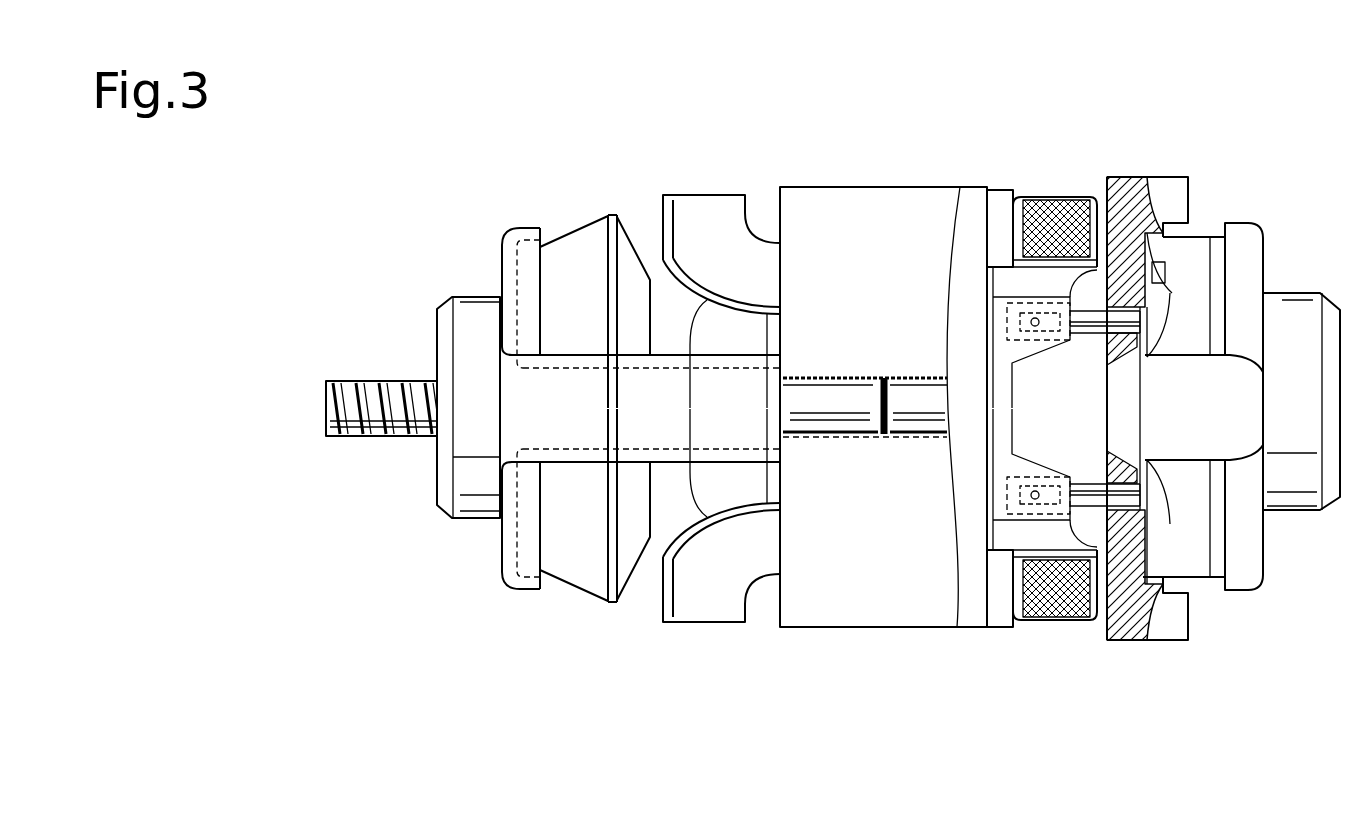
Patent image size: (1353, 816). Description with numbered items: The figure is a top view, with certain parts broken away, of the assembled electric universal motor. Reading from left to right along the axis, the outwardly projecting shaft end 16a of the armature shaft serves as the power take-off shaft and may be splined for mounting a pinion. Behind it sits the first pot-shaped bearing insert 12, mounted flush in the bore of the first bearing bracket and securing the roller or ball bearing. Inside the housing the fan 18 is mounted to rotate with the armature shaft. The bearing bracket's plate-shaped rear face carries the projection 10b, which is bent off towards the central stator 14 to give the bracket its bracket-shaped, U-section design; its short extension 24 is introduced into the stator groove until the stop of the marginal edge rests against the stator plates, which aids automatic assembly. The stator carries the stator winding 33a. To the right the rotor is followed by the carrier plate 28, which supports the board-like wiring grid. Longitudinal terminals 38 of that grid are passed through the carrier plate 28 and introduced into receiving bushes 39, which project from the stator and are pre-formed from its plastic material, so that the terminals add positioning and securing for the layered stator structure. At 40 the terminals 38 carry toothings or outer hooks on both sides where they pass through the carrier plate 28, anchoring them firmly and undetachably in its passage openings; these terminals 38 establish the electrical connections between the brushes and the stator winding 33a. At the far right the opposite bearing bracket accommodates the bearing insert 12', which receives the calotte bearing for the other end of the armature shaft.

The shaft end 16a is at (358, 380).
The bearing insert 12 is at (468, 310).
The fan 18 is at (570, 255).
The projection 10b is at (660, 385).
The stator winding 33a is at (698, 232).
The stator 14 is at (850, 223).
The extension 24 is at (822, 403).
The receiving bush 39 is at (1035, 452).
The terminal 38 is at (1083, 477).
The toothings of terminal 40 is at (1130, 195).
The carrier plate 28 is at (1137, 642).
The bearing insert 12' is at (1301, 306).